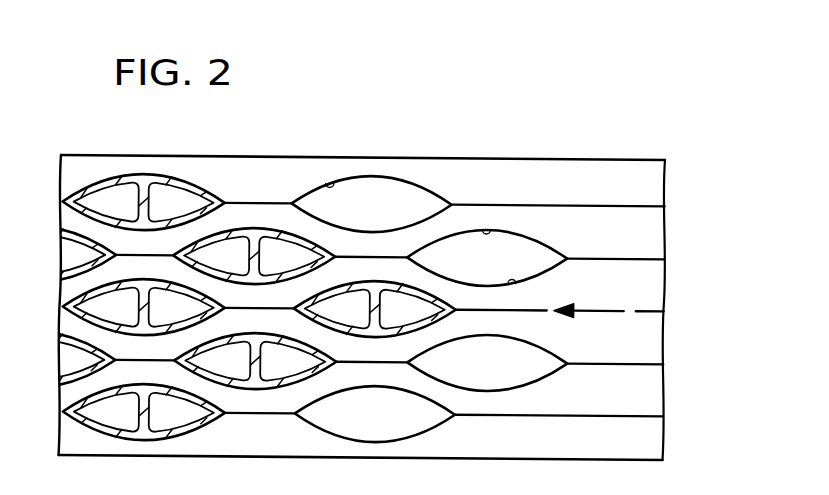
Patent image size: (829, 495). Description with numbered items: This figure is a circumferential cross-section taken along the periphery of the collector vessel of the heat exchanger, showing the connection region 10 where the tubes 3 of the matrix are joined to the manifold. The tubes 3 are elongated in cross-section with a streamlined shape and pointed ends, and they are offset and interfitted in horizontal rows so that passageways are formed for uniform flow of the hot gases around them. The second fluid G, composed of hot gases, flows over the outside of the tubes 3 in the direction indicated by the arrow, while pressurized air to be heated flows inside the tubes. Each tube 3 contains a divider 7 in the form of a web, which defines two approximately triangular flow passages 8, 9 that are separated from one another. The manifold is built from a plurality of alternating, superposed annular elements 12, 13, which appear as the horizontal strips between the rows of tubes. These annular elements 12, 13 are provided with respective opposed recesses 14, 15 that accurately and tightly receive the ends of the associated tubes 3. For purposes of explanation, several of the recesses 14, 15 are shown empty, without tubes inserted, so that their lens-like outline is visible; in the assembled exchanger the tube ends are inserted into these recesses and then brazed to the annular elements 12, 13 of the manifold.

The tube 3 is at (218, 190).
The divider 7 is at (139, 192).
The flow passage 8 is at (104, 195).
The flow passage 9 is at (165, 198).
The connection region 10 is at (476, 150).
The annular element 12 is at (628, 182).
The annular element 13 is at (645, 243).
The recess 14 is at (334, 184).
The recess 15 is at (397, 231).
The second fluid G is at (598, 303).